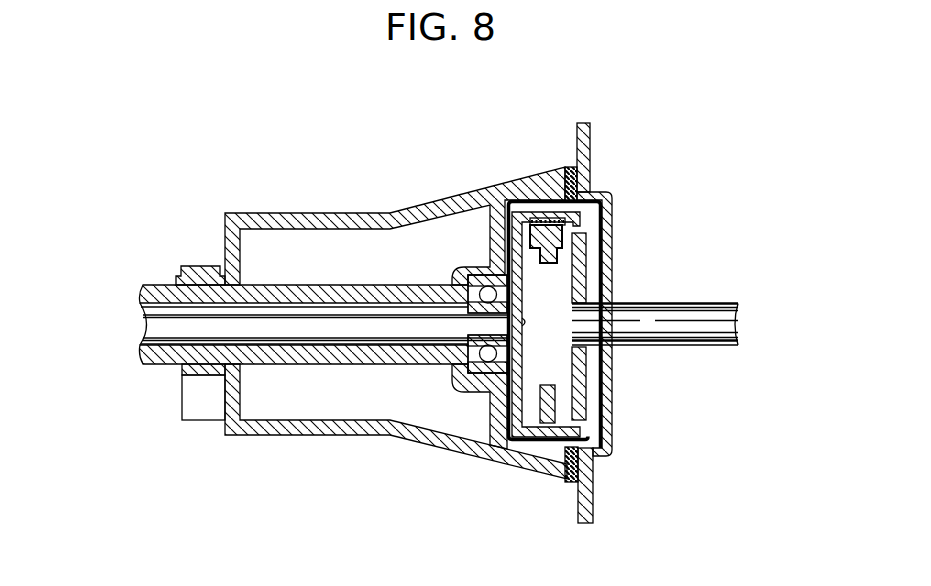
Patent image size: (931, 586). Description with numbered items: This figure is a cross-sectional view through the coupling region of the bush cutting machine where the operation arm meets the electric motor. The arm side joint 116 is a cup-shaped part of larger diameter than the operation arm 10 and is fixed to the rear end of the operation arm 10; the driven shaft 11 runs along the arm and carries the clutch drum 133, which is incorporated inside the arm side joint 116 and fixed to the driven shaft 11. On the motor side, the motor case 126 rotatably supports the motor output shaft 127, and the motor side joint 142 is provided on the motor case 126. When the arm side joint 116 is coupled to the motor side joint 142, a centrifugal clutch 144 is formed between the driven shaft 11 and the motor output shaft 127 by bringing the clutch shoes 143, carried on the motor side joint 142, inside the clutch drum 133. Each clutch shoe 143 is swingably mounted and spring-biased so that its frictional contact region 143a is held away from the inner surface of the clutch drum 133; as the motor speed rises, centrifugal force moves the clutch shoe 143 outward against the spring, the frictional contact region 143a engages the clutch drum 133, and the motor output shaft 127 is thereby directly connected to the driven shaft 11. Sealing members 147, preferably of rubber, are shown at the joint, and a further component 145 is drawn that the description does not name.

The operation arm 10 is at (152, 284).
The driven shaft 11 is at (147, 323).
The arm side joint 116 is at (287, 213).
The motor case 126 is at (588, 135).
The motor output shaft 127 is at (740, 322).
The clutch drum 133 is at (533, 216).
The motor side joint 142 is at (585, 422).
The clutch shoe 143 is at (576, 226).
The frictional contact region 143a is at (548, 217).
The centrifugal clutch 144 is at (525, 441).
The case 145 is at (583, 280).
The sealing member 147 is at (572, 482).